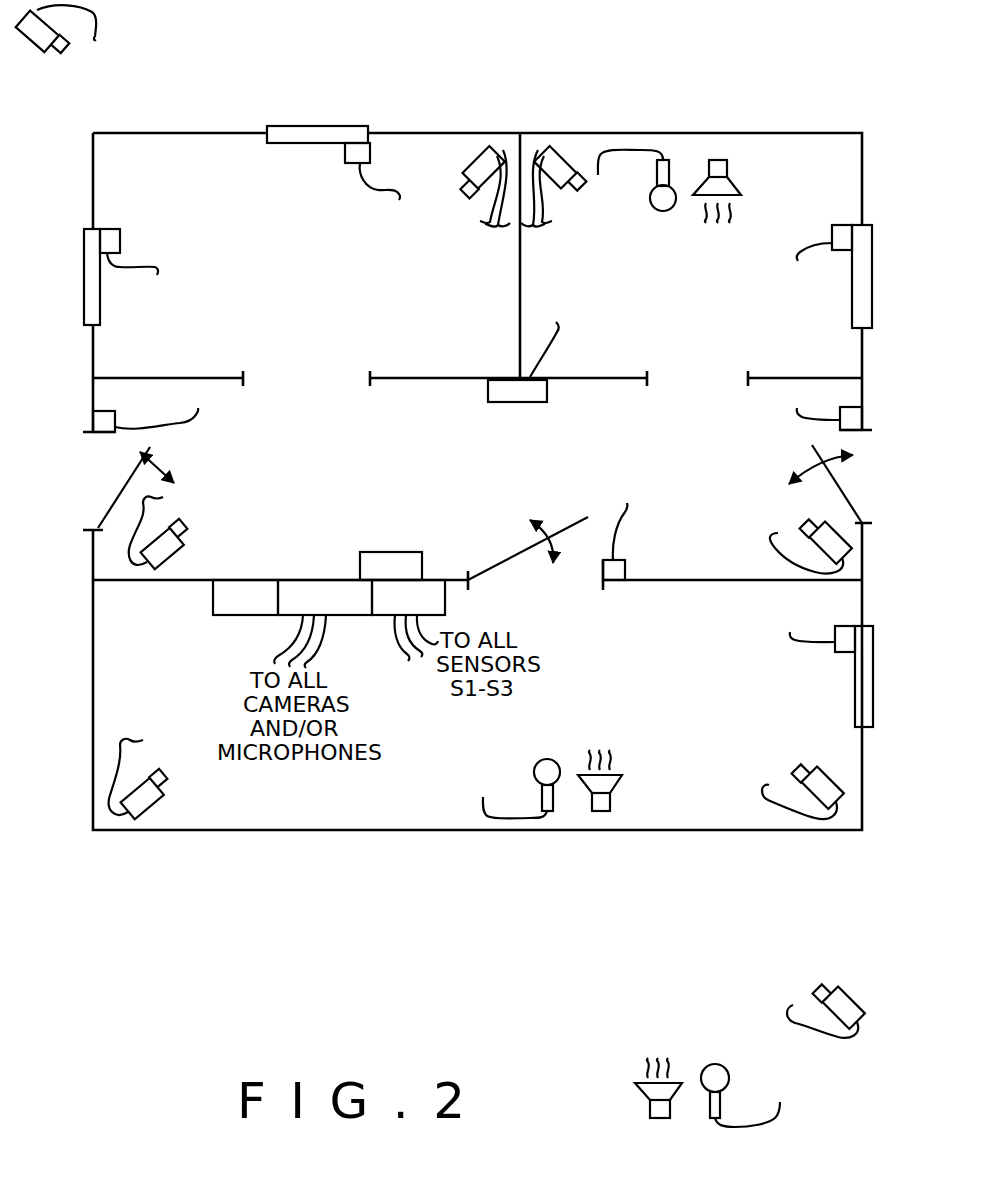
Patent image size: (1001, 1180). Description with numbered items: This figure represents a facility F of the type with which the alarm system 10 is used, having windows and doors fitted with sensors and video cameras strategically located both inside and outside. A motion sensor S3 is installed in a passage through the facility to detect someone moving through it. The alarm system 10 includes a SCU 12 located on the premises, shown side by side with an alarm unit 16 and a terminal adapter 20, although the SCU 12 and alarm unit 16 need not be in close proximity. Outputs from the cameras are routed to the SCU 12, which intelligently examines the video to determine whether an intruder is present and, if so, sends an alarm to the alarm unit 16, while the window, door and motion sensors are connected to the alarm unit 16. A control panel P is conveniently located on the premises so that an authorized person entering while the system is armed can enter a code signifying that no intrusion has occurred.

The alarm system 10 is at (322, 918).
The SCU 12 is at (327, 578).
The alarm unit 16 is at (447, 600).
The terminal adapter 20 is at (247, 617).
The motion sensor S3 is at (513, 402).
The facility F is at (343, 302).
The control panel P is at (402, 552).